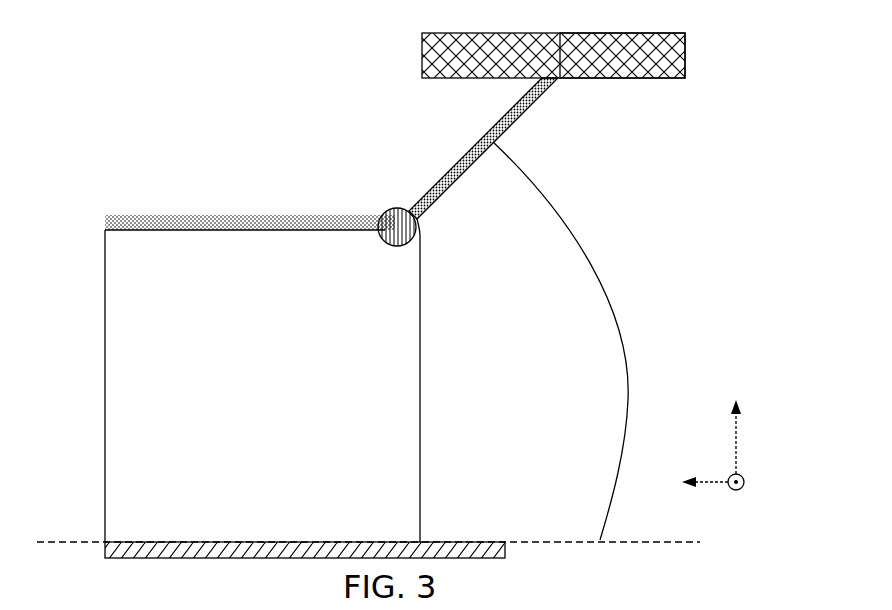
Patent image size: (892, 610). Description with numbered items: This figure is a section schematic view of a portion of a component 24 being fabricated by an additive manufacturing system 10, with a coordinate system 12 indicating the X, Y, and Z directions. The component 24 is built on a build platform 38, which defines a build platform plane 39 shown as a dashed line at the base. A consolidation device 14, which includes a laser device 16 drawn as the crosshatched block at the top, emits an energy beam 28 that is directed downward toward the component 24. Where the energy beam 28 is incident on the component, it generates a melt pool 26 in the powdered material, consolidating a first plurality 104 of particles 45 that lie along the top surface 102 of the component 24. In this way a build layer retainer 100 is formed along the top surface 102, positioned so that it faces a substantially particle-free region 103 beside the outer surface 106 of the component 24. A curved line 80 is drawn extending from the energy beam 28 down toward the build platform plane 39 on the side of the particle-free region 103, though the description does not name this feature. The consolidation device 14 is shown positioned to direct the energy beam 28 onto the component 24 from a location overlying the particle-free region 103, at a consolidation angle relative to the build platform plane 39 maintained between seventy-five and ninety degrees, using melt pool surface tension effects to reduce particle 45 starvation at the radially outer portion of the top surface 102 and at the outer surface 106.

The additive manufacturing system 10 is at (150, 92).
The coordinate system 12 is at (766, 438).
The consolidation device 14 is at (421, 58).
The laser device 16 is at (622, 55).
The component 24 is at (116, 391).
The melt pool 26 is at (391, 208).
The energy beam 28 is at (457, 162).
The build platform 38 is at (474, 541).
The build platform plane 39 is at (60, 540).
The particles 45 is at (170, 228).
The flexible membrane 80 is at (588, 253).
The build layer retainer 100 is at (425, 228).
The top surface 102 is at (118, 224).
The substantially particle-free region 103 is at (538, 380).
The first plurality of particles 104 is at (222, 224).
The outer surface 106 is at (421, 324).